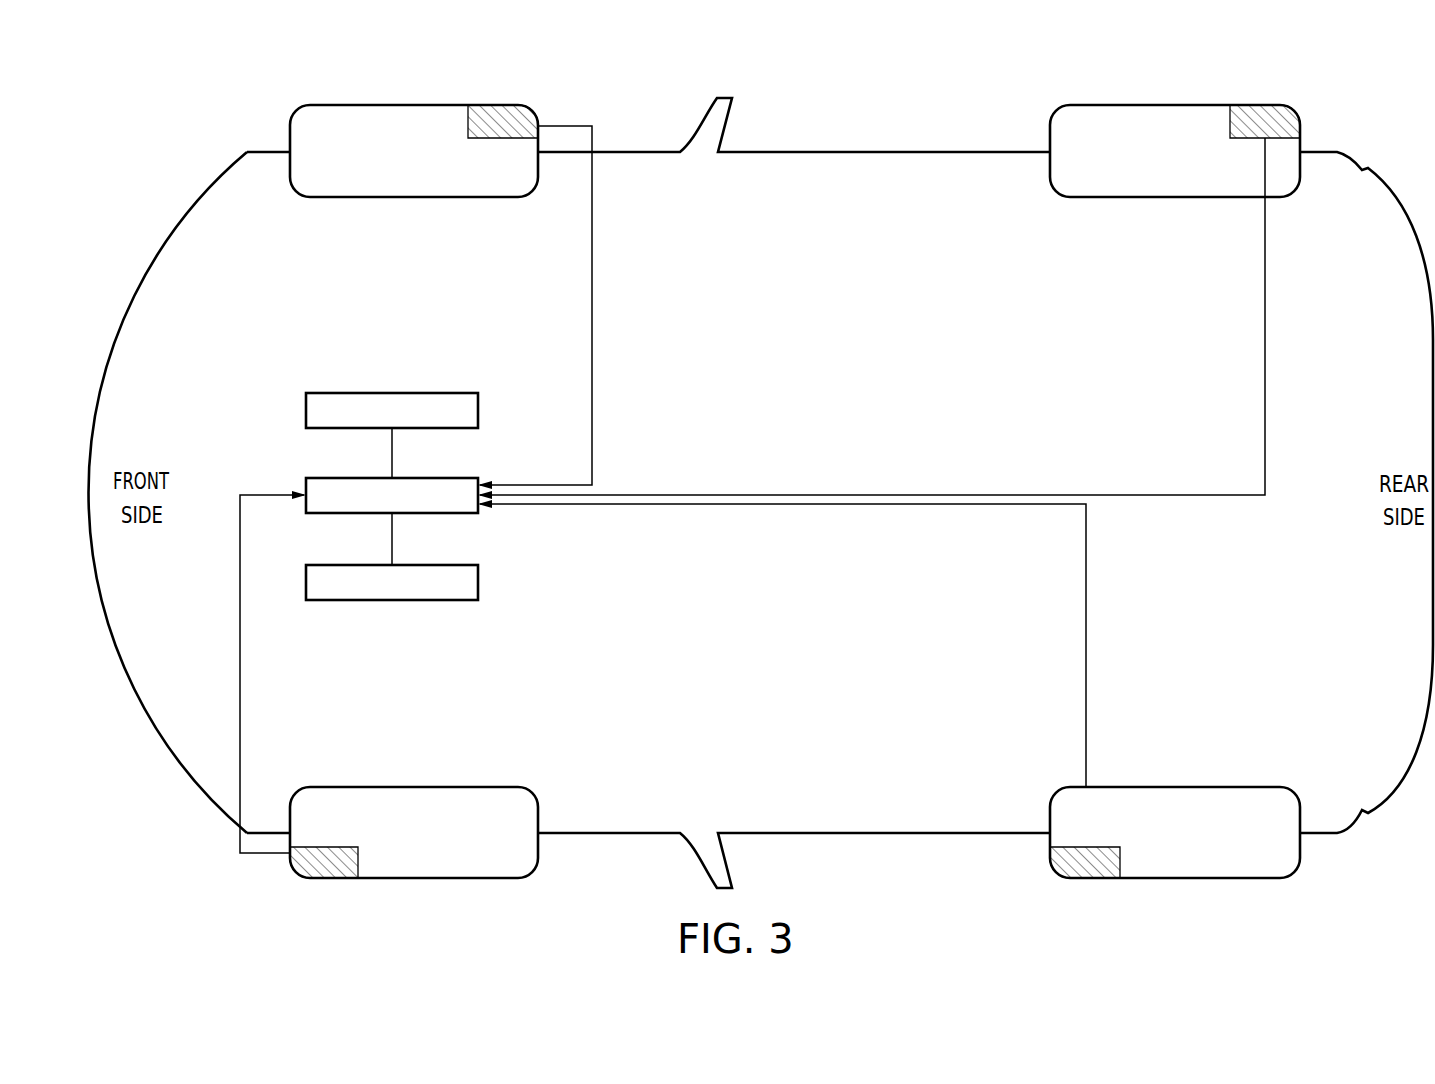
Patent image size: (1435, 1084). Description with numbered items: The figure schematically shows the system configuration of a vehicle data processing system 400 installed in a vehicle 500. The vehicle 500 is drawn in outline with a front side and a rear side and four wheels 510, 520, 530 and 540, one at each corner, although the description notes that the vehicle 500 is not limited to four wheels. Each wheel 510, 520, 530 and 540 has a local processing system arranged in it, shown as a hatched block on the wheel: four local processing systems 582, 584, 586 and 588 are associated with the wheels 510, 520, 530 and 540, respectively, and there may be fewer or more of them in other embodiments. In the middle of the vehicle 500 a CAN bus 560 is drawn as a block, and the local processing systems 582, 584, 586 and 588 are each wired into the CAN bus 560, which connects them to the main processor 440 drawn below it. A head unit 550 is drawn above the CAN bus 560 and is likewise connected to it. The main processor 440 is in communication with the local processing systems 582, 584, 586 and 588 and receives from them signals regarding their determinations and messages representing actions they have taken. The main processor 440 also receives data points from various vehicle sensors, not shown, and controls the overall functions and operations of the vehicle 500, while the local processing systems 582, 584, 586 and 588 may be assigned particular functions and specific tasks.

The vehicle data processing system 400 is at (855, 115).
The main processor 440 is at (478, 582).
The vehicle 500 is at (838, 227).
The wheel 510 is at (440, 167).
The wheel 520 is at (440, 847).
The wheel 530 is at (1200, 167).
The wheel 540 is at (1202, 847).
The head unit 550 is at (478, 411).
The CAN bus 560 is at (304, 482).
The local processing system 582 is at (497, 110).
The local processing system 584 is at (1258, 110).
The local processing system 586 is at (320, 872).
The local processing system 588 is at (1082, 872).